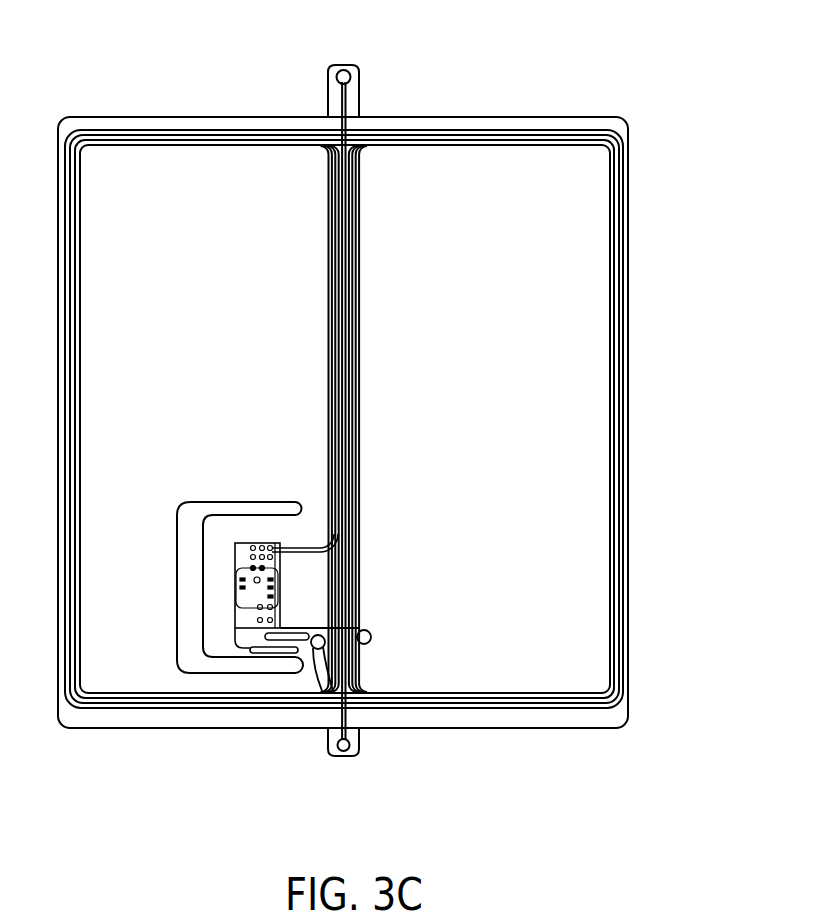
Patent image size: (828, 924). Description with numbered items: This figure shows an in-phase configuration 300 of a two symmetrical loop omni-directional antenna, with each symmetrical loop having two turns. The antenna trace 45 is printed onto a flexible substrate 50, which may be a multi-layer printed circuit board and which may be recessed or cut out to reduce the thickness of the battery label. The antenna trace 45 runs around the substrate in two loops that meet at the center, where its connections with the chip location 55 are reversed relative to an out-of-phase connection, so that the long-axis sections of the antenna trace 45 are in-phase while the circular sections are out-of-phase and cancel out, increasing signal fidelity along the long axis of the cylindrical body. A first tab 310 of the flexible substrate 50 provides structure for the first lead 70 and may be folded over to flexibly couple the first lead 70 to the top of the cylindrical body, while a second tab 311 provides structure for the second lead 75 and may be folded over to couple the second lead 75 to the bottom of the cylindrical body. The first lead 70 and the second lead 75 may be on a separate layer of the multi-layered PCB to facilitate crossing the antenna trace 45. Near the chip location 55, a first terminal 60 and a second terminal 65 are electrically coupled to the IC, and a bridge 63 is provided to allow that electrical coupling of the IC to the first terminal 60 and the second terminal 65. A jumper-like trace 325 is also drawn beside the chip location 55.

The in-phase configuration 300 is at (654, 81).
The first tab 310 is at (373, 67).
The second tab 311 is at (372, 781).
The first lead 70 is at (343, 70).
The second lead 75 is at (343, 752).
The flexible substrate 50 is at (65, 117).
The antenna trace 45 is at (618, 430).
The jumper trace 325 is at (301, 493).
The chip location 55 is at (235, 562).
The first terminal 60 is at (369, 642).
The bridge 63 is at (325, 630).
The second terminal 65 is at (312, 649).